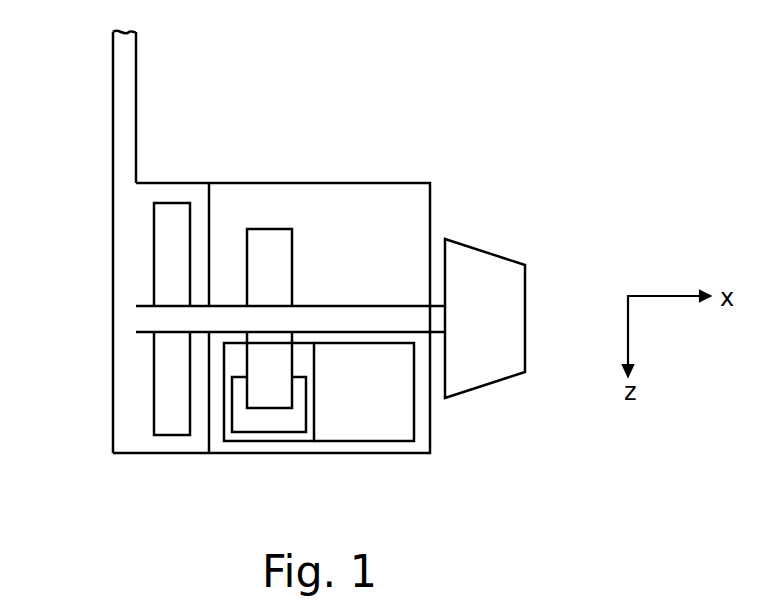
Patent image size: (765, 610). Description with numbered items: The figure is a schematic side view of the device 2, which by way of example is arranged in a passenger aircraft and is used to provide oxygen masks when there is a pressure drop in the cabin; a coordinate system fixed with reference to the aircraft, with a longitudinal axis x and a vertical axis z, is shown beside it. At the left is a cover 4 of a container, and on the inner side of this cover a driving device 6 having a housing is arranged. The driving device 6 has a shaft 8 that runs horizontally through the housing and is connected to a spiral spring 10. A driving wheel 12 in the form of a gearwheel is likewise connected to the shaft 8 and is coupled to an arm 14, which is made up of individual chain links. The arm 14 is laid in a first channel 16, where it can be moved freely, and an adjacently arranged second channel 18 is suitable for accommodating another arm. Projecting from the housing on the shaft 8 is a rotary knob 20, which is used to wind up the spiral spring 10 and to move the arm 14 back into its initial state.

The device 2 is at (610, 76).
The cover 4 is at (127, 158).
The driving device 6 is at (383, 183).
The shaft 8 is at (366, 318).
The spiral spring 10 is at (176, 213).
The driving wheel 12 is at (271, 237).
The arm 14 is at (286, 422).
The first channel 16 is at (298, 362).
The second channel 18 is at (385, 420).
The rotary knob 20 is at (487, 278).